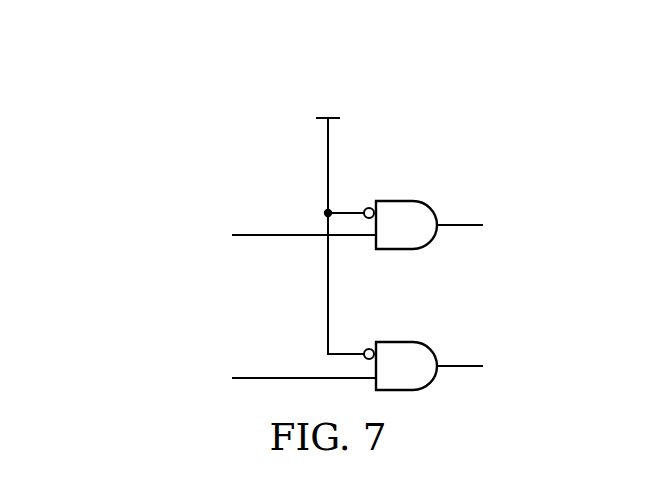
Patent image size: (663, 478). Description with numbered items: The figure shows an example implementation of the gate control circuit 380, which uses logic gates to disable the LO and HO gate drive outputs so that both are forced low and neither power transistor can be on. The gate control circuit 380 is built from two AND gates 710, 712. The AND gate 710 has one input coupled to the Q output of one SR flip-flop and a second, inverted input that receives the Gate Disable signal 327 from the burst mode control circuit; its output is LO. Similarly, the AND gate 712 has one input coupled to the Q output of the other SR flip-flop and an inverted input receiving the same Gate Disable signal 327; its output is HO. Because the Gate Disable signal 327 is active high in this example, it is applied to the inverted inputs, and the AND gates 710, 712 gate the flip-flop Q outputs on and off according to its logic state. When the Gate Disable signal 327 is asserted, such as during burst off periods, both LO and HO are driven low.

The gate control circuit 380 is at (146, 70).
The Gate Disable signal 327 is at (327, 165).
The AND gate 710 is at (400, 201).
The AND gate 712 is at (400, 342).